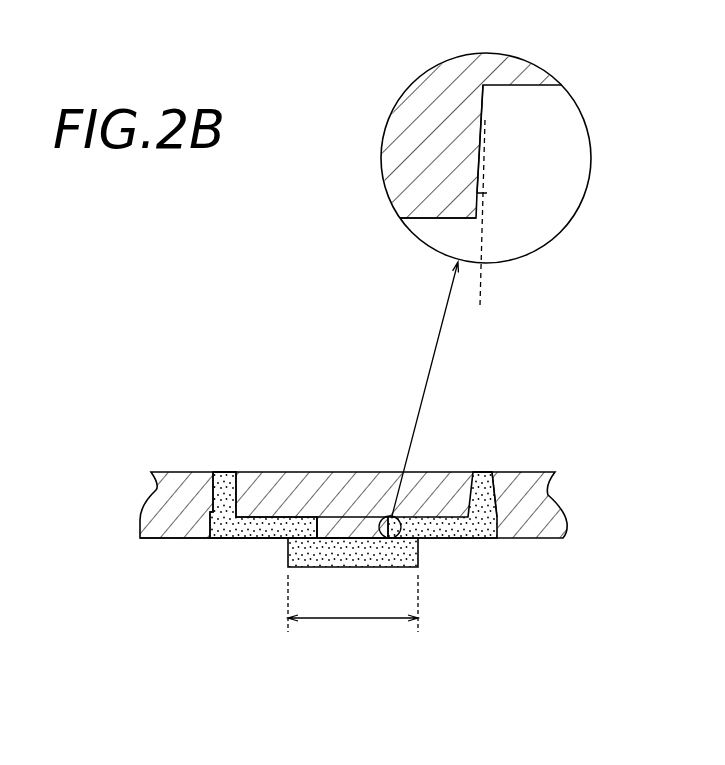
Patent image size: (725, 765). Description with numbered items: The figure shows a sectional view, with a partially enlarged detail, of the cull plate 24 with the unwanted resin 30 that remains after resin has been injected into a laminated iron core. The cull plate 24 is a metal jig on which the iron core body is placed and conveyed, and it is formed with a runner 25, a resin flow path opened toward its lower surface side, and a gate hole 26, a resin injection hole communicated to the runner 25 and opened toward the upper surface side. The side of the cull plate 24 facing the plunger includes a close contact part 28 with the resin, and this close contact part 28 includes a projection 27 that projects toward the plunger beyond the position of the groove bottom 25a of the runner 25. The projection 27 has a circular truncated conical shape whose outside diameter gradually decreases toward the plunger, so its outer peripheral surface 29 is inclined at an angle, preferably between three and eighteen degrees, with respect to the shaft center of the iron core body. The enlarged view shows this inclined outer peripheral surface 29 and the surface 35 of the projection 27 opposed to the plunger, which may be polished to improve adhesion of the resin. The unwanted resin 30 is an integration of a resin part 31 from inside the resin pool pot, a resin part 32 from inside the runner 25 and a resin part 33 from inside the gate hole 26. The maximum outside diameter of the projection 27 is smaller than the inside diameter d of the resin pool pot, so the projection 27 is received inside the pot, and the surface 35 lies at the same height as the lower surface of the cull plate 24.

The cull plate 24 is at (127, 521).
The runner 25 is at (253, 475).
The groove bottom 25a is at (250, 520).
The gate hole 26 is at (204, 481).
The projection 27 is at (353, 527).
The close contact part 28 is at (310, 532).
The outer peripheral surface 29 is at (483, 112).
The unwanted resin 30 is at (431, 570).
The resin part 31 is at (334, 520).
The resin part 32 is at (267, 538).
The resin part 33 is at (203, 513).
The surface 35 is at (363, 533).
The inside diameter d is at (353, 603).